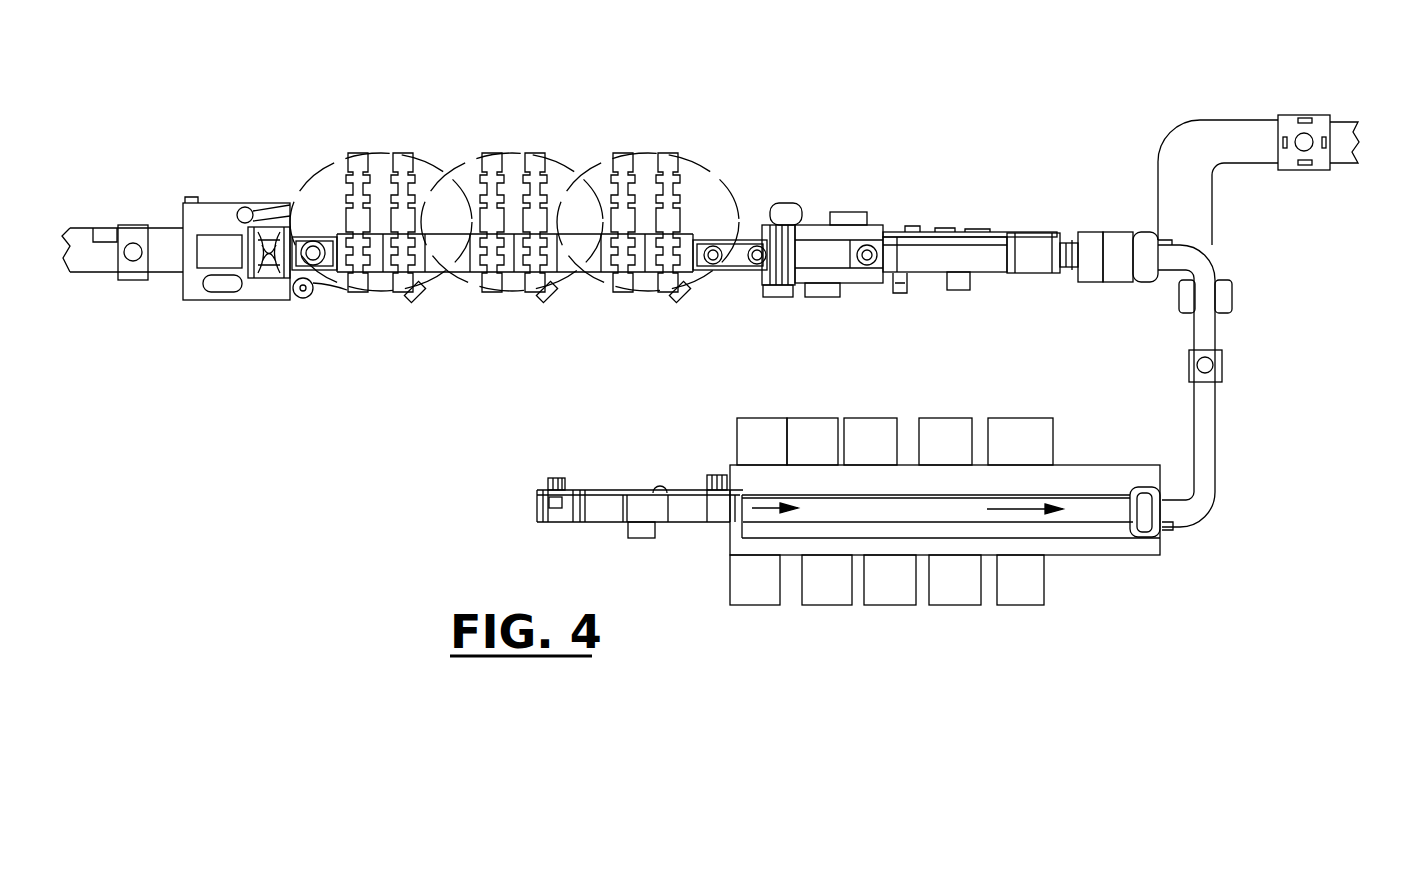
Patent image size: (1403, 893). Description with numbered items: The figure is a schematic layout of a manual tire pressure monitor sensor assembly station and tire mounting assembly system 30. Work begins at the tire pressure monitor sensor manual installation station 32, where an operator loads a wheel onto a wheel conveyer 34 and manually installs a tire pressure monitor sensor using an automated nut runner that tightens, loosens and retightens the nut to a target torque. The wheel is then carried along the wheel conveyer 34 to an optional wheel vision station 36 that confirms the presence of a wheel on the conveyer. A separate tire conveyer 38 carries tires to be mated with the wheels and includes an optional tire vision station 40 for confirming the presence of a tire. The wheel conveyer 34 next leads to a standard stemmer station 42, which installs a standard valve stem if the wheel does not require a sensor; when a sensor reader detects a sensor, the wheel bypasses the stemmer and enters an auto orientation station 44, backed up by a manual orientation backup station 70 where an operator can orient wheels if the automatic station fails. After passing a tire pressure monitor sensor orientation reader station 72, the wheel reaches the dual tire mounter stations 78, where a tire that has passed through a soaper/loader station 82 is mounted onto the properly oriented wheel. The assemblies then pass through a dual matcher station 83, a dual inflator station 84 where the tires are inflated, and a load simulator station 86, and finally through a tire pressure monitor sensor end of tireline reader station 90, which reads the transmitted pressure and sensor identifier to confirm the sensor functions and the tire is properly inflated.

The manual tire pressure monitor sensor assembly station and tire mounting assembly 30 is at (440, 394).
The tire pressure monitor sensor manual installation station 32 is at (587, 523).
The wheel conveyer 34 is at (1100, 510).
The wheel vision station 36 is at (1222, 378).
The tire conveyer 38 is at (1203, 118).
The tire vision station 40 is at (1308, 113).
The standard stemmer station 42 is at (1087, 232).
The auto orientation station 44 is at (1047, 233).
The manual orientation backup station 70 is at (942, 232).
The tire pressure monitor sensor orientation reader station 72 is at (870, 250).
The dual tire mounter stations 78 is at (623, 152).
The soaper/loader station 82 is at (787, 203).
The dual matcher station 83 is at (492, 152).
The dual inflator station 84 is at (358, 152).
The load simulator station 86 is at (217, 203).
The tire pressure monitor sensor end of tireline reader station 90 is at (133, 248).